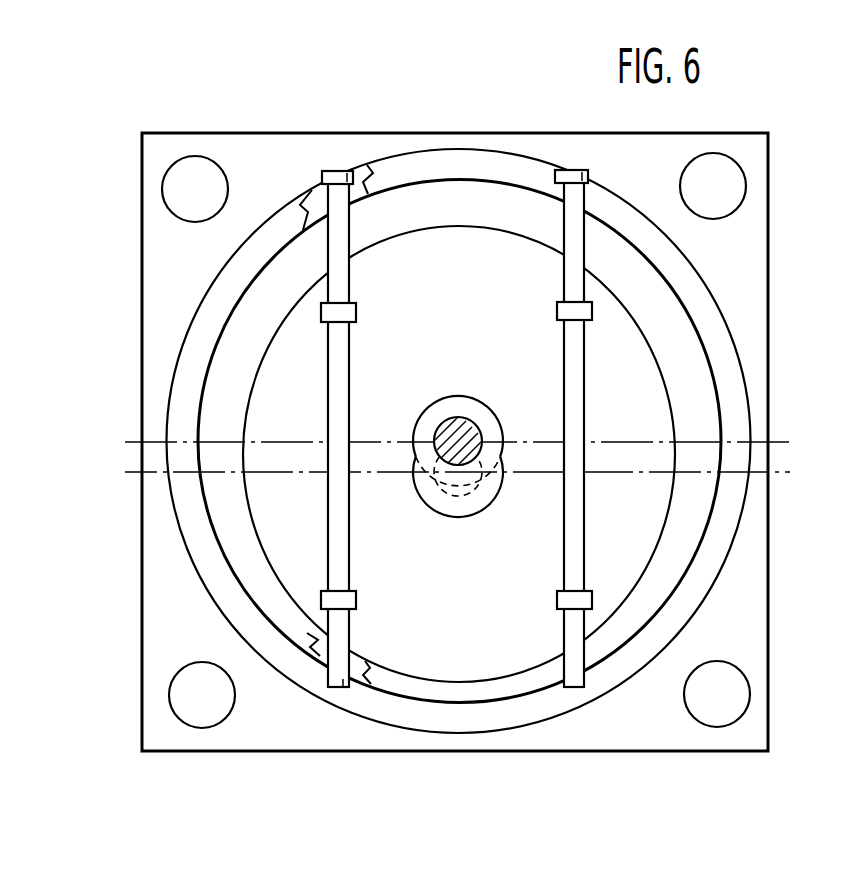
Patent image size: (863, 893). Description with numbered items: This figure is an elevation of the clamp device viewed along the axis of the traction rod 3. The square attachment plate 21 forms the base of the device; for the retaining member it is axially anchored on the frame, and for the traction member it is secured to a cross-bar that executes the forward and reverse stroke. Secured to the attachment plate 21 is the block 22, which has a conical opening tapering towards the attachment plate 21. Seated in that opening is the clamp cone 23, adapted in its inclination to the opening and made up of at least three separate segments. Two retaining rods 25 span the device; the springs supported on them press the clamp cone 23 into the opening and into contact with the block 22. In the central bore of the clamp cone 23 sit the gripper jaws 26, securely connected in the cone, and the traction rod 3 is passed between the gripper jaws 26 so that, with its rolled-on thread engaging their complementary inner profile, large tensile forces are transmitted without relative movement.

The attachment plate 21 is at (795, 240).
The block 22 is at (792, 309).
The clamp cone 23 is at (790, 374).
The retaining rods 25 is at (620, 512).
The gripper jaws 26 is at (433, 415).
The traction rod 3 is at (467, 430).